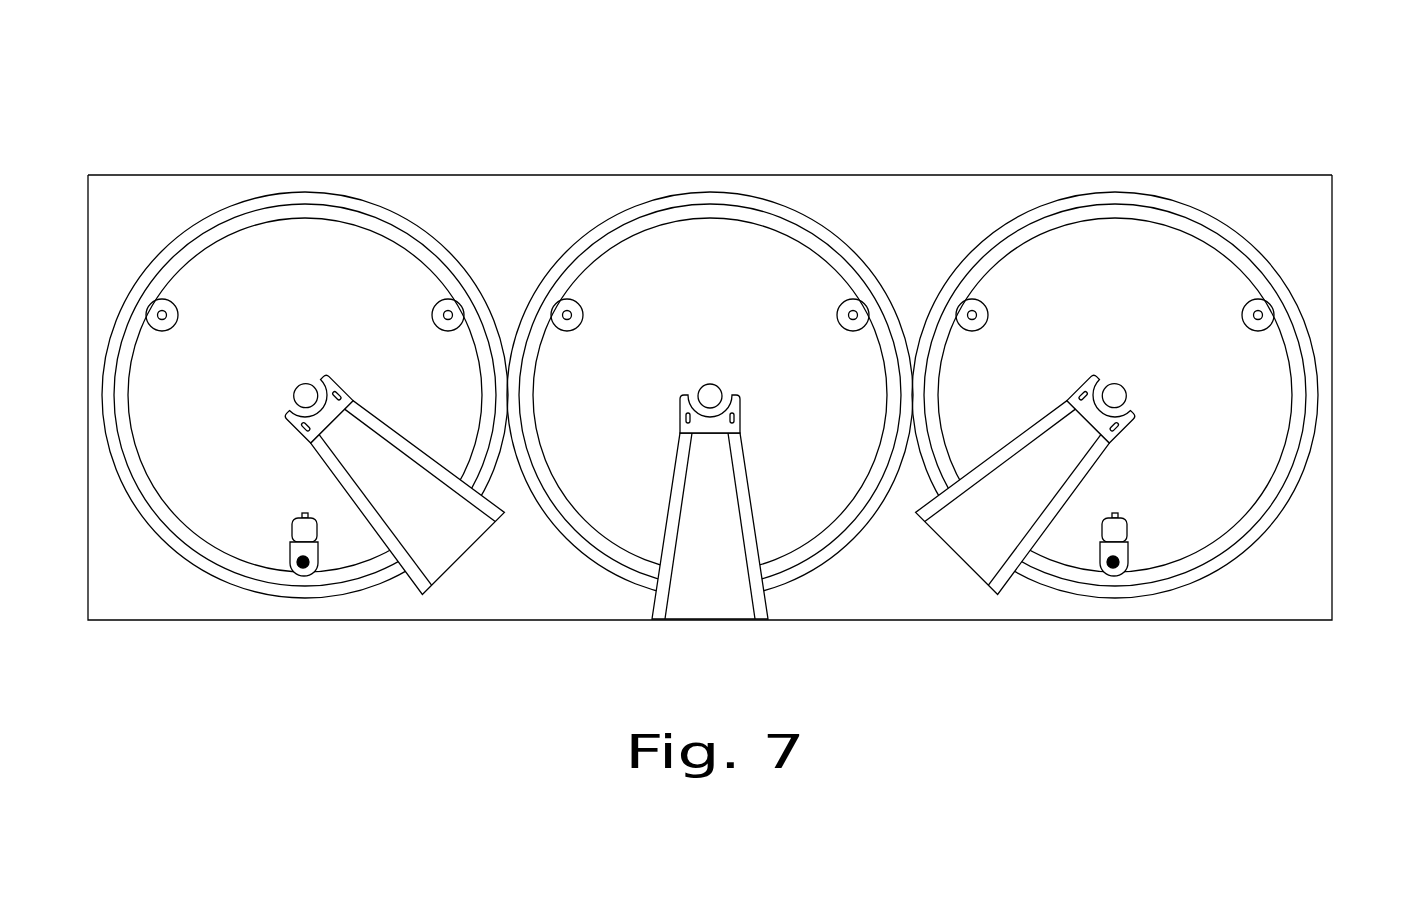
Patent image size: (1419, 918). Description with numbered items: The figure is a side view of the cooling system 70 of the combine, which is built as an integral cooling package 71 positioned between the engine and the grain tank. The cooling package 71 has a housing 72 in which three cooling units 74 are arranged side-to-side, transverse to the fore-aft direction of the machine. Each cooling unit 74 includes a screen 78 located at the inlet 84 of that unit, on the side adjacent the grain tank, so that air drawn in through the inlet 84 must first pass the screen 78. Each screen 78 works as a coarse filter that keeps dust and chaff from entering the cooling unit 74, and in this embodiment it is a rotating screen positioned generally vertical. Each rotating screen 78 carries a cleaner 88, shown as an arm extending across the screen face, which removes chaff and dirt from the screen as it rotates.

The cooling system 70 is at (1008, 135).
The integral cooling package 71 is at (507, 173).
The housing 72 is at (1277, 175).
The cooling unit 74 is at (232, 500).
The screen 78 is at (320, 170).
The inlet 84 is at (227, 292).
The cleaner 88 is at (435, 562).